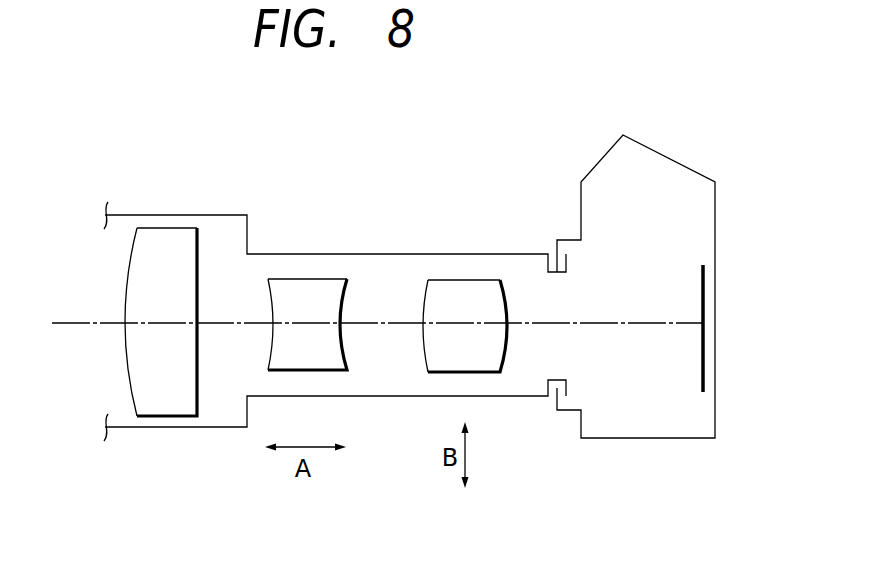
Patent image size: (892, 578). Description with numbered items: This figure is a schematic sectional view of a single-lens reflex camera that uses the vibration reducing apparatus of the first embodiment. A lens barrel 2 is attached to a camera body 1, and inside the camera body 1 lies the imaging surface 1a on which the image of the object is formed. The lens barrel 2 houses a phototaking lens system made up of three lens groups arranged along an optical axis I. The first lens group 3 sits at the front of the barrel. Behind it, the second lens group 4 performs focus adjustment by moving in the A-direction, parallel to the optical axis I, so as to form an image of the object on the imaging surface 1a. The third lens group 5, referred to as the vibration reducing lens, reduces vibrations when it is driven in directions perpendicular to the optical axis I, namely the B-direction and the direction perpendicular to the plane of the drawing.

The camera body 1 is at (705, 138).
The imaging surface 1a is at (705, 368).
The lens barrel 2 is at (394, 213).
The first lens group 3 is at (173, 405).
The second lens group 4 is at (328, 361).
The third lens group 5 is at (487, 363).
The optical axis I is at (87, 322).